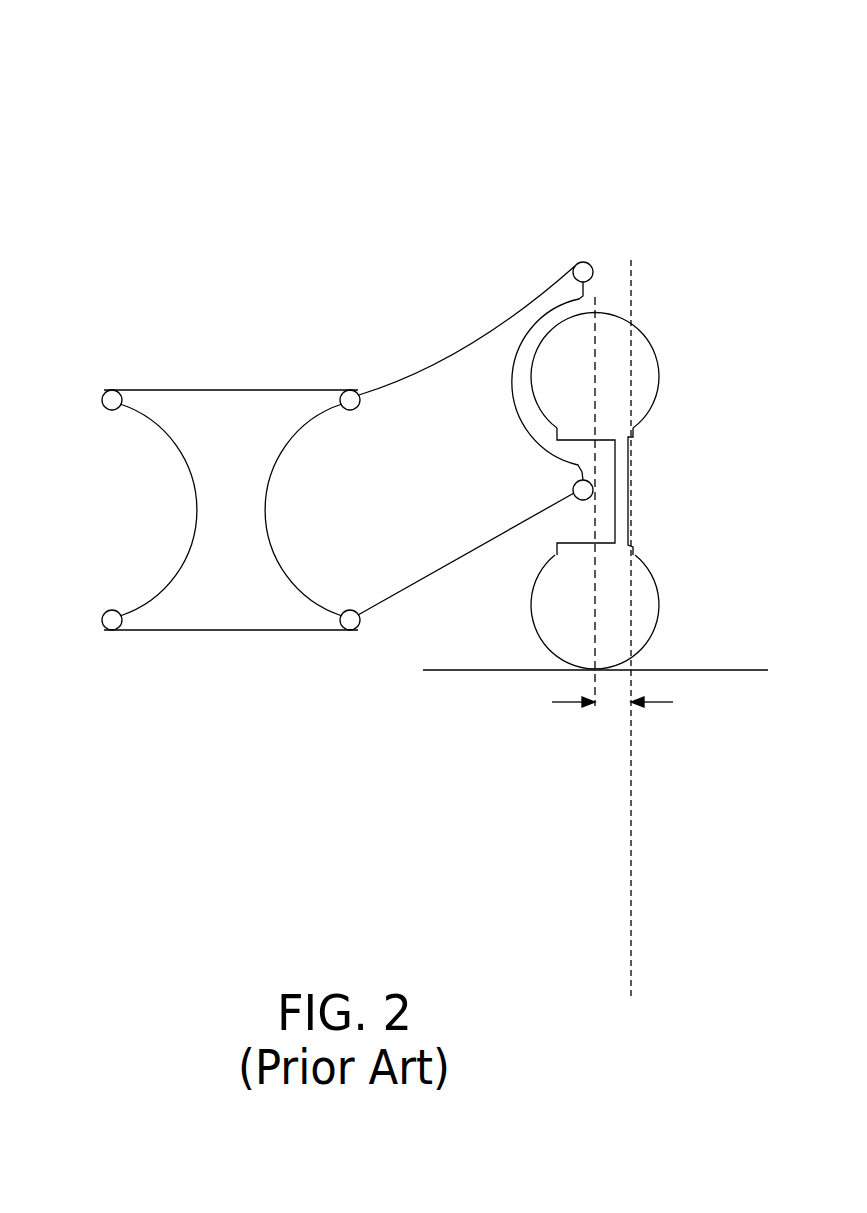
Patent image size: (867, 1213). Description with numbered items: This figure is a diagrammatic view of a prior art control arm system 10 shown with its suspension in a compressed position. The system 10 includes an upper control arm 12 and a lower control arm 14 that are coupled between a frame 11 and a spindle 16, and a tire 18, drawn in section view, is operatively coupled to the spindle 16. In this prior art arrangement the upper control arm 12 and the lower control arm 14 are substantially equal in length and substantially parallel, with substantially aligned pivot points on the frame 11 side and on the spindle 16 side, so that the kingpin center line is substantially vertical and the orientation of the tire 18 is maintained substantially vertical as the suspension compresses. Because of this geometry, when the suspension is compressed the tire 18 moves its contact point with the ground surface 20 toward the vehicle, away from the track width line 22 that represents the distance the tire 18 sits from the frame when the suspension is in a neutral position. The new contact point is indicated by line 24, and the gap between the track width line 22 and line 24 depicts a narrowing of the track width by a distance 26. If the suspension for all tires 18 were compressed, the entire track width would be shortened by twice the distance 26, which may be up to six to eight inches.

The prior art control arm system 10 is at (440, 183).
The frame 11 is at (230, 427).
The upper control arm 12 is at (443, 360).
The lower control arm 14 is at (448, 560).
The spindle 16 is at (525, 436).
The tire 18 is at (670, 307).
The ground surface 20 is at (462, 670).
The track width line 22 is at (636, 800).
The line 24 is at (595, 609).
The distance 26 is at (666, 703).